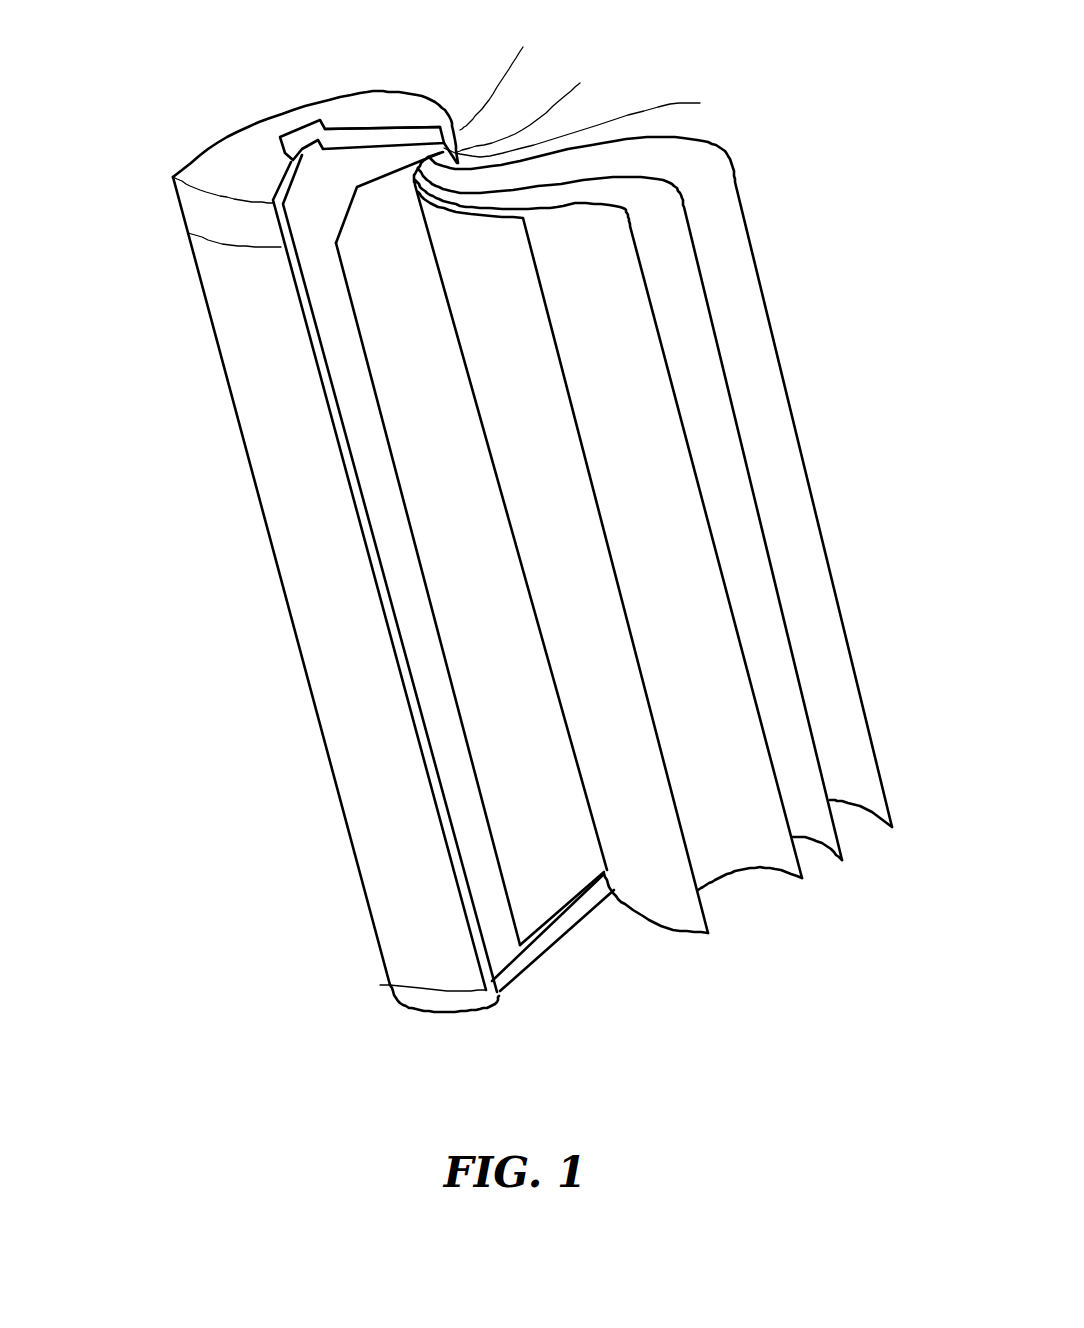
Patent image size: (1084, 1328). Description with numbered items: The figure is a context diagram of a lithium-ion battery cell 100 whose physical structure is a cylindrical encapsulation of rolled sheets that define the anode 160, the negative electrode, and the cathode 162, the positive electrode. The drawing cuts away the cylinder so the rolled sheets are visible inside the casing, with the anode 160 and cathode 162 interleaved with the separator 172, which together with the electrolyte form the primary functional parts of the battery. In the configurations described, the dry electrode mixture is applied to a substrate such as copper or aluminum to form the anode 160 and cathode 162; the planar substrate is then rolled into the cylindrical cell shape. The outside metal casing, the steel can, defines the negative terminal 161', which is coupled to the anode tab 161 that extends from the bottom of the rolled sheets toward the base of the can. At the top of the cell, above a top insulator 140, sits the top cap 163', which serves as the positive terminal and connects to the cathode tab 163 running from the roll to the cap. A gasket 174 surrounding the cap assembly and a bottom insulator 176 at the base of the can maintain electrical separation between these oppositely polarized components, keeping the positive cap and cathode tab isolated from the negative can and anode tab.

The cell 100 is at (215, 790).
The top insulator 140 is at (300, 193).
The anode 160 is at (733, 405).
The anode tab 161 is at (562, 985).
The negative terminal 161' is at (286, 551).
The cathode 162 is at (665, 918).
The cathode tab 163 is at (618, 109).
The top cap 163' is at (358, 87).
The separator 172 is at (695, 613).
The gasket 174 is at (420, 127).
The bottom insulator 176 is at (380, 985).